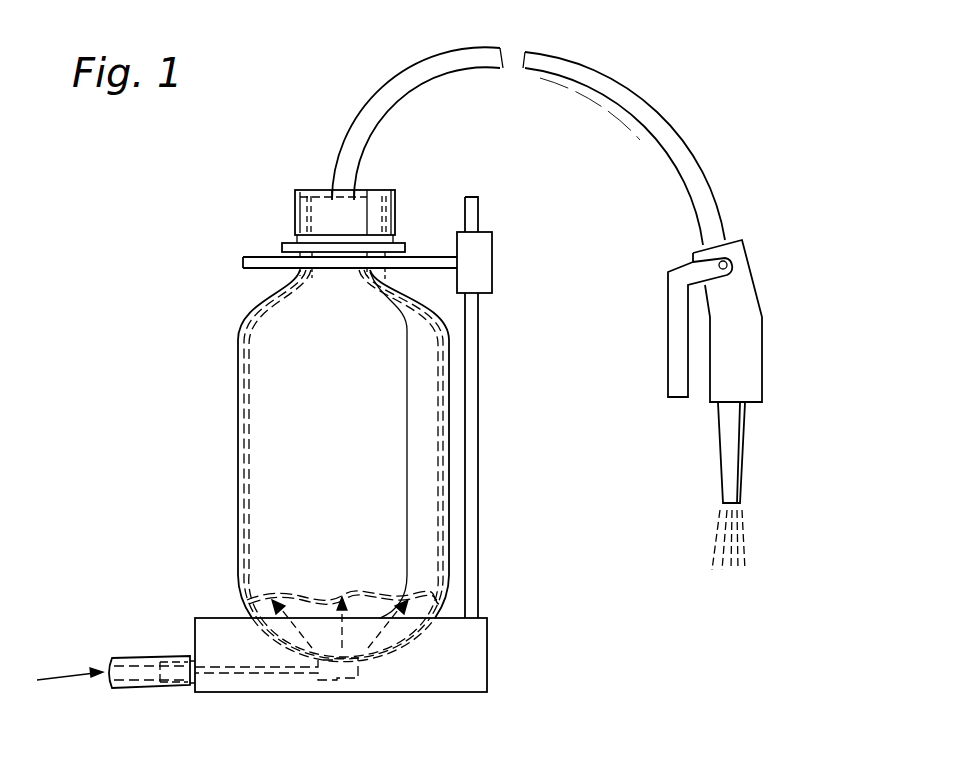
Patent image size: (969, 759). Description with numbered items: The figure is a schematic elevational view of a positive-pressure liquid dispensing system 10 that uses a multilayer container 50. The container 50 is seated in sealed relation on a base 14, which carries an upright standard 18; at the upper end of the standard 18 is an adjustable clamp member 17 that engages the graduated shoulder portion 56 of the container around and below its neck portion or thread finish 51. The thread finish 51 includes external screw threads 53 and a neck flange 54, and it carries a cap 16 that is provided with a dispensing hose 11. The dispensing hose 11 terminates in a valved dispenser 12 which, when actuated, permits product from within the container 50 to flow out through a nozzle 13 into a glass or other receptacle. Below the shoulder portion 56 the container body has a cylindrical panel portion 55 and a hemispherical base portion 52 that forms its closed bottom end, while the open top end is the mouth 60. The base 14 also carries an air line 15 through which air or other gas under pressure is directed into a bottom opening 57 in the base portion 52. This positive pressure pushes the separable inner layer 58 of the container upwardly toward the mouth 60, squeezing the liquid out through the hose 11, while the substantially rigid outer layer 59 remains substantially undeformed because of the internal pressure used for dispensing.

The positive-pressure liquid dispensing system 10 is at (168, 432).
The dispensing hose 11 is at (538, 73).
The valved dispenser 12 is at (750, 287).
The nozzle 13 is at (748, 437).
The base 14 is at (490, 659).
The air line 15 is at (133, 656).
The cap 16 is at (297, 189).
The adjustable clamp member 17 is at (427, 262).
The standard 18 is at (480, 358).
The container 50 is at (238, 396).
The neck portion or thread finish 51 is at (395, 200).
The base portion 52 is at (447, 607).
The external screw threads 53 is at (299, 208).
The neck flange 54 is at (400, 247).
The cylindrical panel portion 55 is at (238, 443).
The shoulder portion 56 is at (280, 278).
The bottom opening 57 is at (334, 682).
The separable inner layer 58 is at (297, 592).
The outer layer 59 is at (242, 603).
The mouth 60 is at (360, 190).